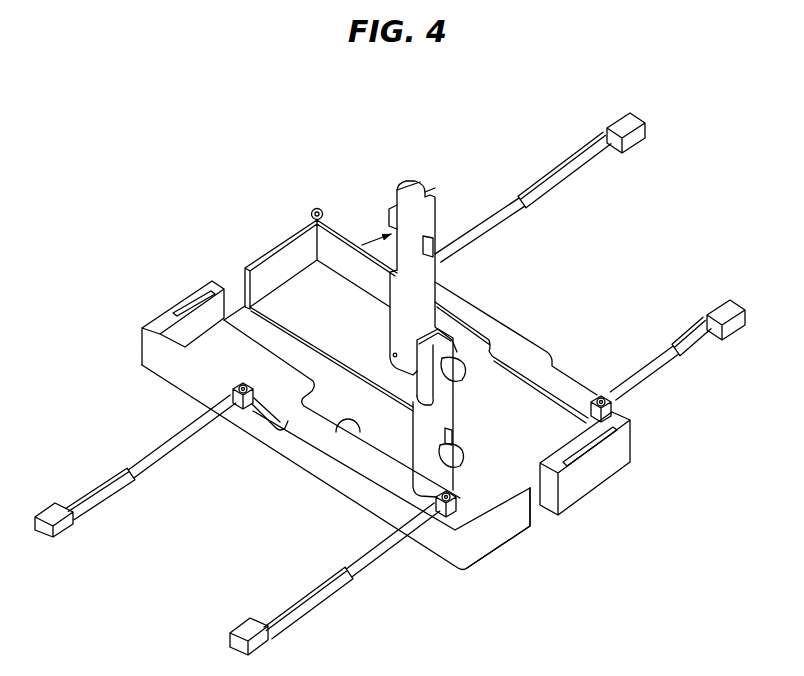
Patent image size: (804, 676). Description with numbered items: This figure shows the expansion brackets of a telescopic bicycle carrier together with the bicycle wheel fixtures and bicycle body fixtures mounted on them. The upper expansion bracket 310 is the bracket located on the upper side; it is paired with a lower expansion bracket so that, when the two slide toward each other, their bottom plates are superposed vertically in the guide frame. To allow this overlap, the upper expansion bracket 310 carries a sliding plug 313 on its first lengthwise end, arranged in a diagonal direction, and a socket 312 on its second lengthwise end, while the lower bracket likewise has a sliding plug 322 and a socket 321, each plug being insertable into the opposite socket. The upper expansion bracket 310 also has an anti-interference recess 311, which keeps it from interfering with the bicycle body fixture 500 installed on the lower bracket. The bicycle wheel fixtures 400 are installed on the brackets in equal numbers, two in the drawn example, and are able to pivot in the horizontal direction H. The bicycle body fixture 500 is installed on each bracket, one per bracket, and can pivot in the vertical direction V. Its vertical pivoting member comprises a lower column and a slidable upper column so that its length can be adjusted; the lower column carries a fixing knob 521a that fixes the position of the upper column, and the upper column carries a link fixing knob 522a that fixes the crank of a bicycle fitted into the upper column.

The upper expansion bracket 310 is at (253, 450).
The anti-interference recess 311 is at (360, 431).
The socket 312 is at (165, 317).
The sliding plug 313 is at (490, 538).
The socket 321 is at (590, 472).
The sliding plug 322 is at (270, 247).
The bicycle wheel fixture 400 is at (553, 152).
The bicycle body fixture 500 is at (412, 168).
The fixing knob 521a is at (455, 457).
The link fixing knob 522a is at (712, 292).
The vertical direction V is at (336, 292).
The horizontal direction H is at (625, 210).